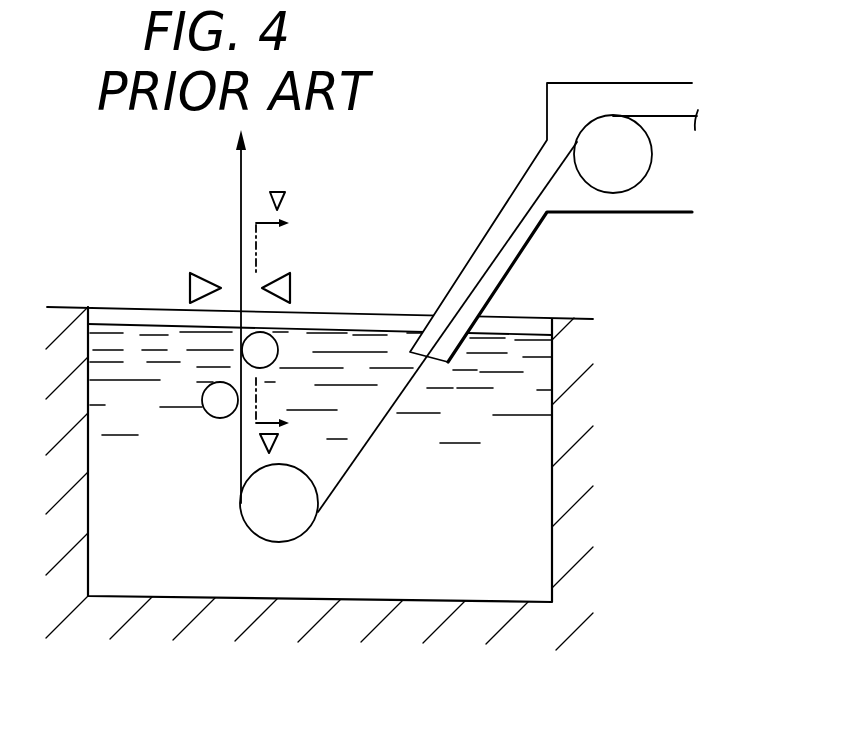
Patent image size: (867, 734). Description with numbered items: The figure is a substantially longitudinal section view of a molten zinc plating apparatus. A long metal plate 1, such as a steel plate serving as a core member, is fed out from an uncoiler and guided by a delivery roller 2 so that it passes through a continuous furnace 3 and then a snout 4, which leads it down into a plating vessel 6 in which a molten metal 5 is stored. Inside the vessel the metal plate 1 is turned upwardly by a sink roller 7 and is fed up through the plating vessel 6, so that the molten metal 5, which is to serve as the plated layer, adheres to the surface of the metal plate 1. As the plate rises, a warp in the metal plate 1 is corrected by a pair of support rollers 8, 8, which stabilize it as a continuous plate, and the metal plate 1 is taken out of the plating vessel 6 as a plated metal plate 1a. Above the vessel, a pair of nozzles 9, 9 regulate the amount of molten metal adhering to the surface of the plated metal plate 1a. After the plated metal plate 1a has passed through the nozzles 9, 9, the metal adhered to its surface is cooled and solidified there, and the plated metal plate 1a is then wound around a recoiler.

The metal plate 1 is at (355, 463).
The plated metal plate 1a is at (241, 181).
The delivery roller 2 is at (613, 172).
The continuous furnace 3 is at (607, 83).
The snout 4 is at (520, 178).
The molten metal 5 is at (528, 440).
The plating vessel 6 is at (548, 515).
The sink roller 7 is at (290, 527).
The support rollers 8 is at (265, 350).
The nozzles 9 is at (190, 280).